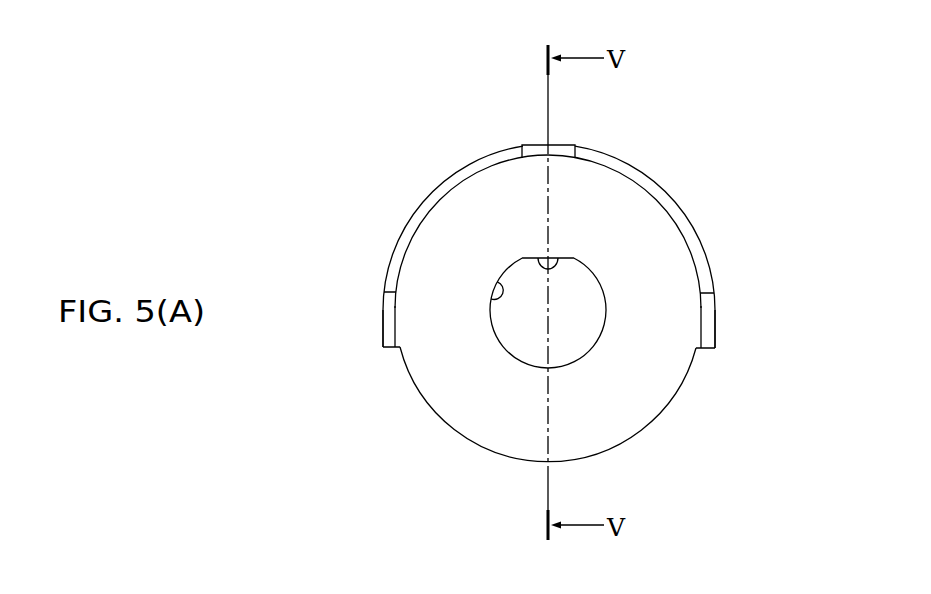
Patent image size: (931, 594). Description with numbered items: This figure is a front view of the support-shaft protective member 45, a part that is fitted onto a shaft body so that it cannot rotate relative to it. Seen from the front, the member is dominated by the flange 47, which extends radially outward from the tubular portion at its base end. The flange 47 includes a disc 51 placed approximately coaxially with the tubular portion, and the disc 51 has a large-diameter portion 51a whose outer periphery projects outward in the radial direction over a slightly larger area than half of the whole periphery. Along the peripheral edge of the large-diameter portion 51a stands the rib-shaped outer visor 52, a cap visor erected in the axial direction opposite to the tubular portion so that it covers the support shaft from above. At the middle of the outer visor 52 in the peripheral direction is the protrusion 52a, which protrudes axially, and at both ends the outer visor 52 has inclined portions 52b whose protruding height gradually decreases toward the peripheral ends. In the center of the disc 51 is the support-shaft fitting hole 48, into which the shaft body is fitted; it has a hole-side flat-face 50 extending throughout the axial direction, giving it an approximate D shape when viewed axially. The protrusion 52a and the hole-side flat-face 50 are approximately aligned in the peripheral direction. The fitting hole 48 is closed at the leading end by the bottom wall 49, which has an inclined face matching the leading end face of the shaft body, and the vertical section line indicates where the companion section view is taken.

The support-shaft protective member 45 is at (447, 153).
The flange 47 is at (437, 413).
The support-shaft fitting hole 48 is at (491, 298).
The bottom wall 49 is at (567, 342).
The hole-side flat-face 50 is at (539, 261).
The disc 51 is at (450, 380).
The large-diameter portion 51a is at (418, 202).
The outer visor 52 is at (659, 188).
The protrusion 52a is at (532, 144).
The inclined portion 52b is at (382, 330).